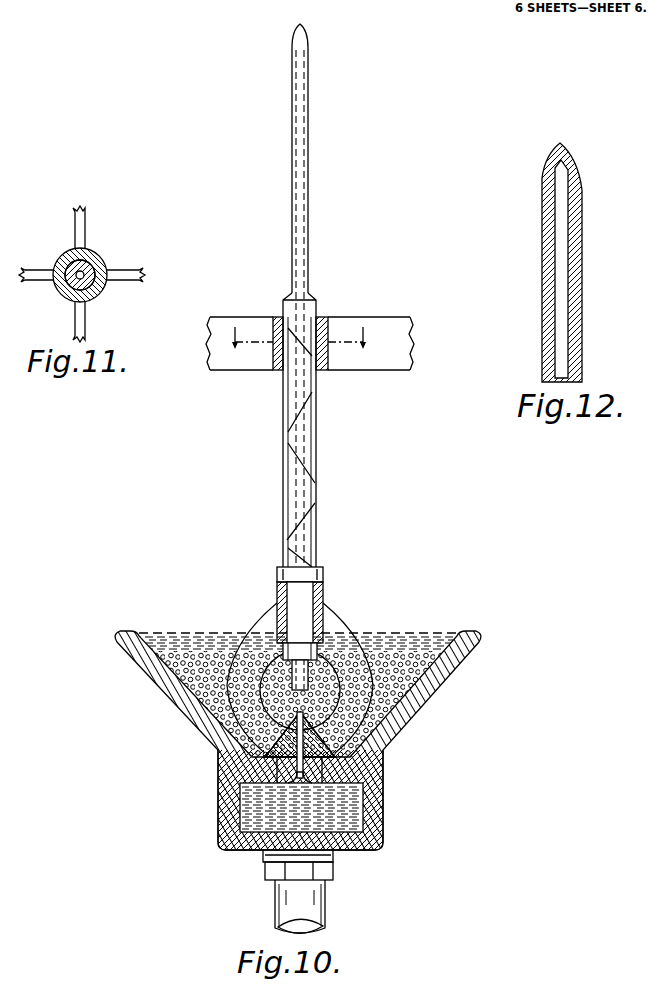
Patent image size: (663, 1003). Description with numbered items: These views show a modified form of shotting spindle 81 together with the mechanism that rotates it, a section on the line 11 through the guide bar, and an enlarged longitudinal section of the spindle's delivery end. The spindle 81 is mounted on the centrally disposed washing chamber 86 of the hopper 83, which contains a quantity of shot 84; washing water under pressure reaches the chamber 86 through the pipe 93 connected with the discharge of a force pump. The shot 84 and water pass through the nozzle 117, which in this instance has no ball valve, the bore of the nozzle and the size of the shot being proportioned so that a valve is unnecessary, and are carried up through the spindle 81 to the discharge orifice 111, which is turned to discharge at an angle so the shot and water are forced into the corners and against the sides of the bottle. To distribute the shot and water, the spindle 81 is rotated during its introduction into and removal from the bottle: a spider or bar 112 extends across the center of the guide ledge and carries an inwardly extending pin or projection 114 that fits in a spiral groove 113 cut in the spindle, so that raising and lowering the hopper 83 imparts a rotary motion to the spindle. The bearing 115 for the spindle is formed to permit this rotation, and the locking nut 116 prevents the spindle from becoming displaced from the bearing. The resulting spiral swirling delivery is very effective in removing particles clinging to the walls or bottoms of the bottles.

In FIG. 10, the shotting spindle 81 is at (308, 178).
In FIG. 12, the discharge orifice 111 is at (568, 167).
In FIG. 10, the spider or bar 112 is at (260, 368).
In FIG. 10, the spiral groove 113 is at (310, 400).
In FIG. 11, the pin or projection 114 is at (88, 260).
In FIG. 10, the bearing 115 is at (322, 610).
In FIG. 10, the locking nut 116 is at (325, 657).
In FIG. 10, the nozzle 117 is at (218, 757).
In FIG. 10, the shot 84 is at (417, 660).
In FIG. 10, the hopper 83 is at (473, 652).
In FIG. 10, the washing chamber 86 is at (350, 818).
In FIG. 10, the pipe 93 is at (326, 908).
In FIG. 10, the section line 11- 11 is at (299, 346).